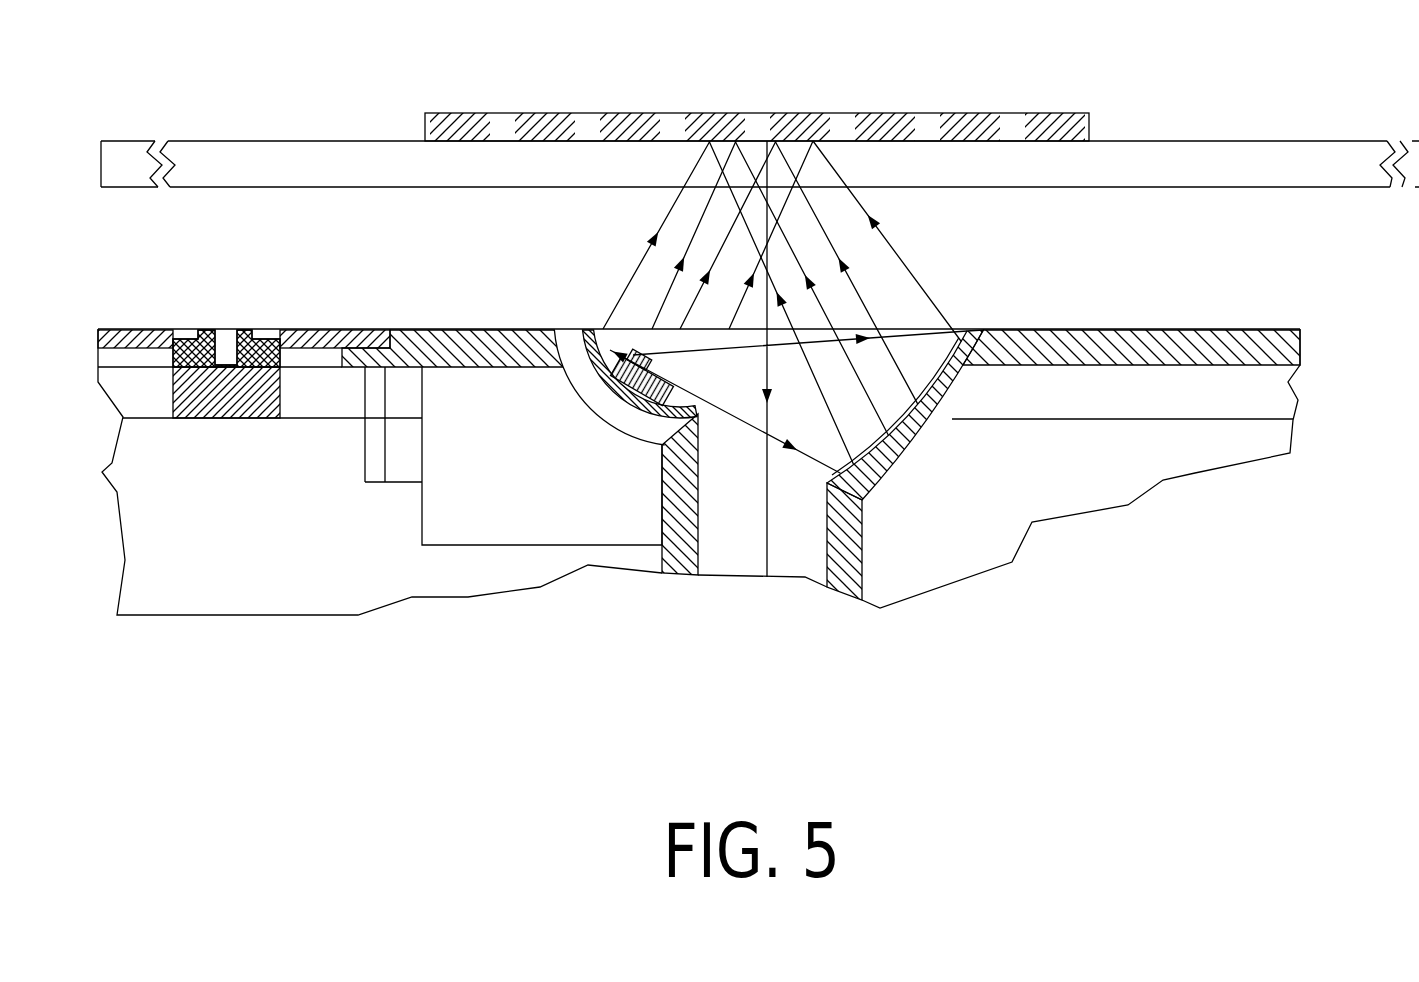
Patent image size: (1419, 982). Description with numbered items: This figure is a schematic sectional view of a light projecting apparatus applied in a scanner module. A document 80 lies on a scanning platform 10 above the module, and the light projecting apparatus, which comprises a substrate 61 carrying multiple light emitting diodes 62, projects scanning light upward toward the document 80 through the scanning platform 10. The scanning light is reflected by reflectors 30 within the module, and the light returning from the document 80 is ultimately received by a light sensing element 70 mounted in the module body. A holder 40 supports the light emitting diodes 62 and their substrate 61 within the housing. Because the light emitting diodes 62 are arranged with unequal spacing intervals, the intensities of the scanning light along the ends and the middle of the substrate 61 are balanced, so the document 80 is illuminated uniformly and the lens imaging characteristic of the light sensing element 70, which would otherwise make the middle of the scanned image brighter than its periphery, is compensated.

The scanning platform 10 is at (1289, 141).
The reflectors 30 is at (930, 330).
The holder 40 is at (545, 330).
The substrate 61 is at (630, 366).
The light emitting diodes 62 is at (632, 393).
The light sensing element 70 is at (250, 330).
The document 80 is at (1000, 113).